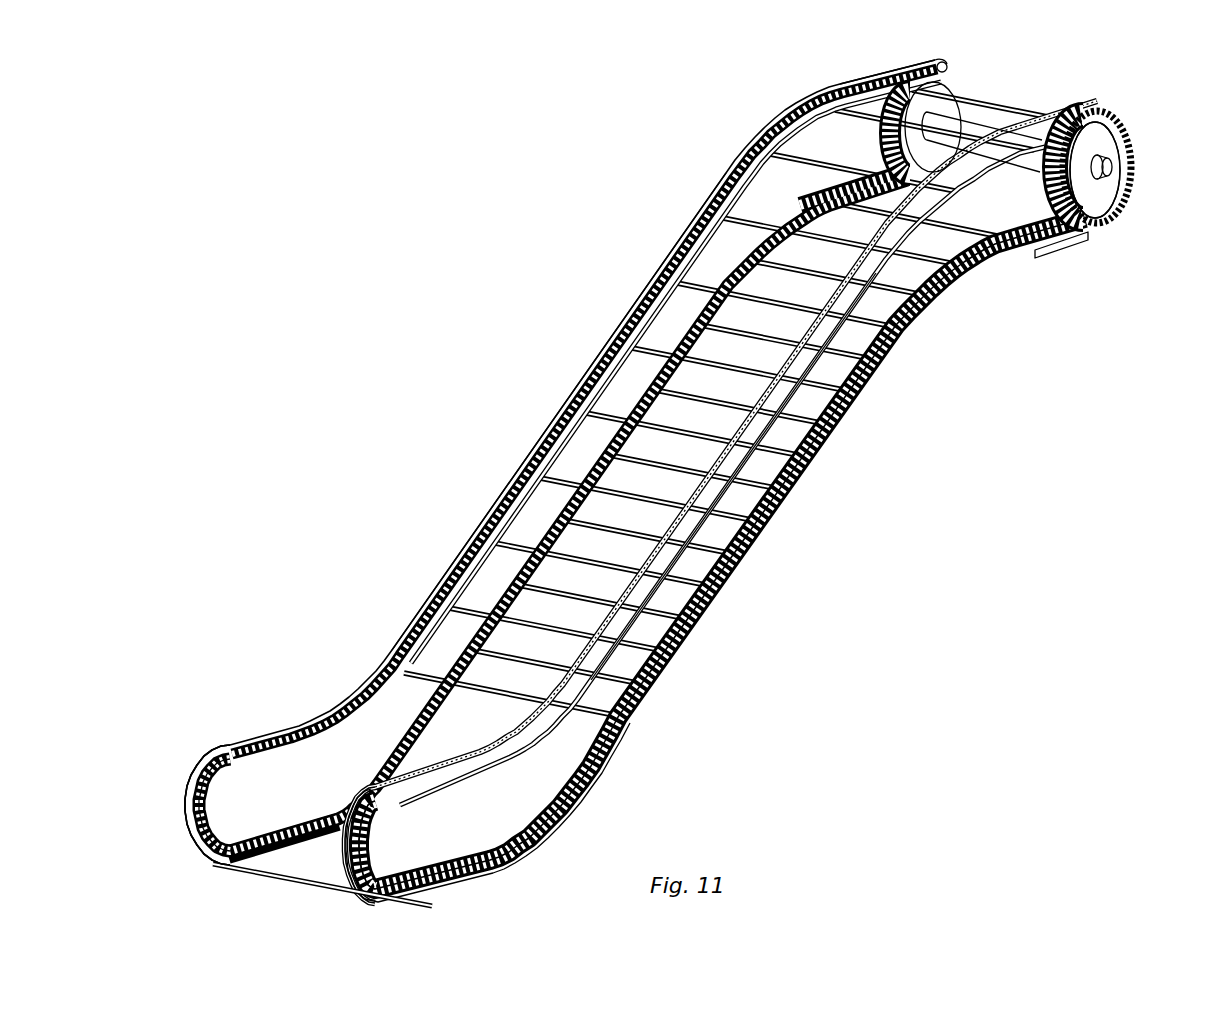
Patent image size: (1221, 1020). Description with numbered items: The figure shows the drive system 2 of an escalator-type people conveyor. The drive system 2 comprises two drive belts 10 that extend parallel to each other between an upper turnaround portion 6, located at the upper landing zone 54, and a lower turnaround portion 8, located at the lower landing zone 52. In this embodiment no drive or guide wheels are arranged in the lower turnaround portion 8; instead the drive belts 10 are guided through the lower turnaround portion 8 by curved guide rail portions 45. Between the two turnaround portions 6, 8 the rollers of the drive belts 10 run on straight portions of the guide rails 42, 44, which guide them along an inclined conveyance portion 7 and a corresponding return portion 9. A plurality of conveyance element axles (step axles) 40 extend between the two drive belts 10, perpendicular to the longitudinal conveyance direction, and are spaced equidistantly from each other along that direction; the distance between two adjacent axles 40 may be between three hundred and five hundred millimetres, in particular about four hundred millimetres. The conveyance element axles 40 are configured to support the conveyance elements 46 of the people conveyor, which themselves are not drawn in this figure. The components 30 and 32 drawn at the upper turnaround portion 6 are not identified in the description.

The drive system 2 is at (300, 212).
The upper turnaround portion 6 is at (1157, 100).
The inclined conveyance portion 7 is at (565, 380).
The lower turnaround portion 8 is at (160, 852).
The return portion 9 is at (886, 412).
The drive belts 10 is at (941, 53).
The drive shaft 30 is at (1008, 160).
The sprocket 32 is at (975, 66).
The conveyance element axles 40 is at (1017, 92).
The guide rail 42 is at (832, 110).
The guide rail 44 is at (855, 78).
The curved guide rail portions 45 is at (185, 793).
The conveyance elements 46 is at (226, 805).
The lower landing zone 52 is at (195, 725).
The upper landing zone 54 is at (788, 74).